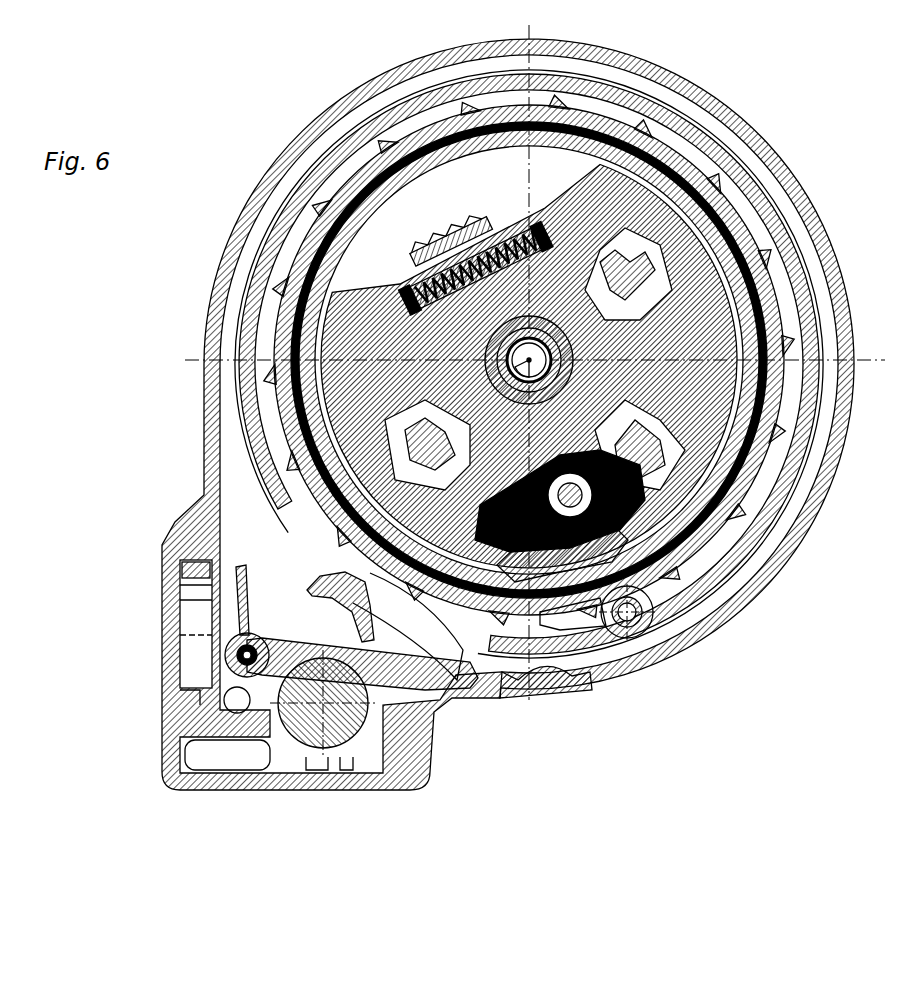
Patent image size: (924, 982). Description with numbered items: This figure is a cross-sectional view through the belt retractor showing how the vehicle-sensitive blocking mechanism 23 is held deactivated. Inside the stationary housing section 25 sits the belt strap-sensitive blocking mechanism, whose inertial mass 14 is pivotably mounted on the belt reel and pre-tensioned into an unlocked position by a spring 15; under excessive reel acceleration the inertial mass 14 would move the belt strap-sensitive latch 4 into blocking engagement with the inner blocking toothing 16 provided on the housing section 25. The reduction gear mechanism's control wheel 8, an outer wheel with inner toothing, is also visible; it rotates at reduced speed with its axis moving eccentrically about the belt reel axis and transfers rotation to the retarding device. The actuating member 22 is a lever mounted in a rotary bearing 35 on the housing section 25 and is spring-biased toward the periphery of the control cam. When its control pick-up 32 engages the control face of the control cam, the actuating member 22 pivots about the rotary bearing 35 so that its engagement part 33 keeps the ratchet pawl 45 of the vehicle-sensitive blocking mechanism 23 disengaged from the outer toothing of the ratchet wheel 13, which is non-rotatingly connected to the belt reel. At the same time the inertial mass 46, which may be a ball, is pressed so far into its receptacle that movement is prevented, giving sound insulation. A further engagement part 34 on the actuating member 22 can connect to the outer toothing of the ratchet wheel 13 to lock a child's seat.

The belt strap-sensitive latch 4 is at (615, 562).
The control wheel 8 is at (420, 212).
The ratchet wheel 13 is at (733, 506).
The inertial mass 14 is at (742, 342).
The spring 15 is at (640, 152).
The inner blocking toothing 16 is at (288, 406).
The actuating member 22 is at (548, 665).
The vehicle-sensitive blocking mechanism 23 is at (332, 812).
The housing section 25 is at (210, 290).
The control pick-up 32 is at (375, 578).
The engagement part 33 is at (325, 640).
The engagement part 34 is at (500, 705).
The rotary bearing 35 is at (642, 622).
The ratchet pawl 45 is at (412, 740).
The inertial mass 46 is at (287, 745).